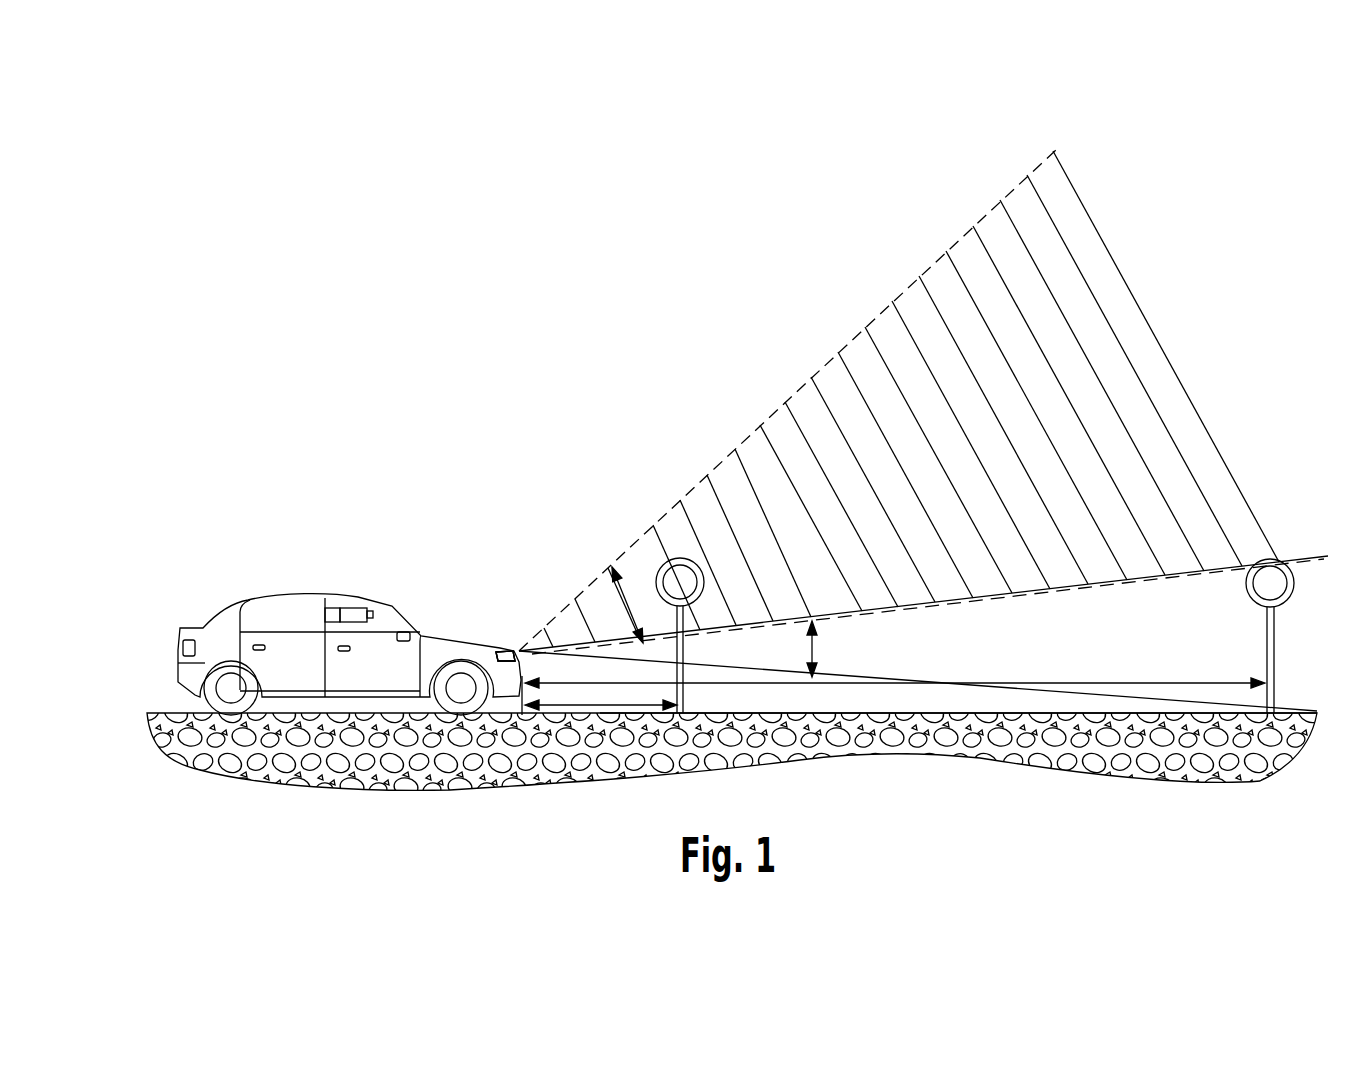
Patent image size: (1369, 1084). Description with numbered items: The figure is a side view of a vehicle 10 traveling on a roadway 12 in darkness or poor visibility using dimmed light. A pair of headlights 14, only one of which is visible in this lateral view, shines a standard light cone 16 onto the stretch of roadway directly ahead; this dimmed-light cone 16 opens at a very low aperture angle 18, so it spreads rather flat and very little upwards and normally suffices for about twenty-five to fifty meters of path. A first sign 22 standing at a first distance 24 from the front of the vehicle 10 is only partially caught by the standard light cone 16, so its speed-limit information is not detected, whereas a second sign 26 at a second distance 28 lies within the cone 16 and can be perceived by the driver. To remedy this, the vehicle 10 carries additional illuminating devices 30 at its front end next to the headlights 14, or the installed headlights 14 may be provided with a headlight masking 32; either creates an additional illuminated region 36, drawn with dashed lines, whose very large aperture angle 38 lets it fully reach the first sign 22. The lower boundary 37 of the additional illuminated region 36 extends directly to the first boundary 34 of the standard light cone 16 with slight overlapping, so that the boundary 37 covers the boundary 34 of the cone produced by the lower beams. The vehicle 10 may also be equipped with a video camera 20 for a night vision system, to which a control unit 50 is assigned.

The vehicle 10 is at (224, 569).
The roadway 12 is at (172, 714).
The headlights 14 is at (497, 645).
The standard light cone 16 is at (952, 645).
The aperture angle 18 is at (818, 648).
The video camera 20 is at (353, 611).
The first sign 22 is at (668, 565).
The first distance 24 is at (600, 706).
The second sign 26 is at (1283, 598).
The second distance 28 is at (1028, 683).
The additional illuminating devices 30 is at (497, 645).
The headlight masking 32 is at (497, 645).
The first boundary of standard light cone 34 is at (1190, 572).
The additional illuminated region 36 is at (890, 340).
The boundary of additional illuminated region 37 is at (1147, 600).
The aperture angle 38 is at (630, 602).
The control unit 50 is at (330, 612).